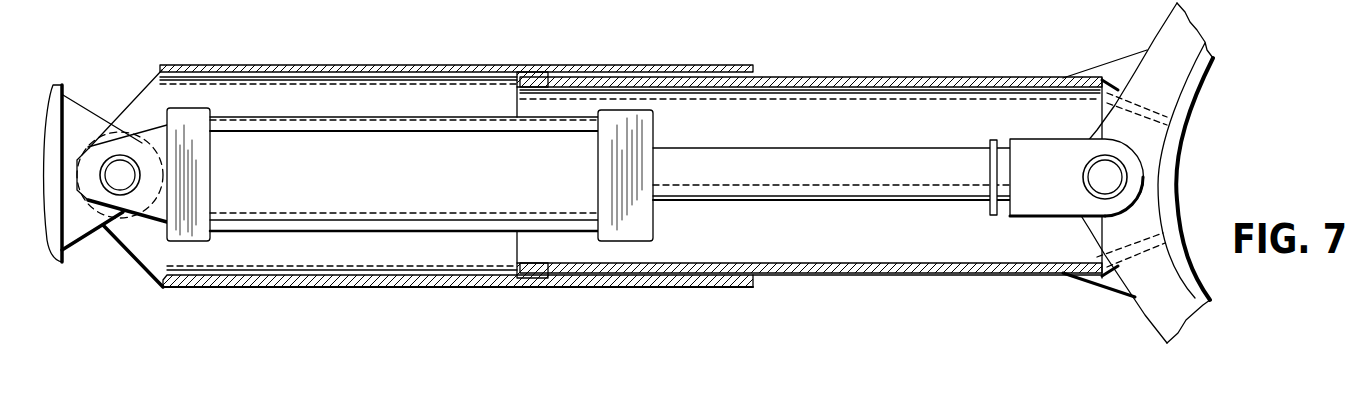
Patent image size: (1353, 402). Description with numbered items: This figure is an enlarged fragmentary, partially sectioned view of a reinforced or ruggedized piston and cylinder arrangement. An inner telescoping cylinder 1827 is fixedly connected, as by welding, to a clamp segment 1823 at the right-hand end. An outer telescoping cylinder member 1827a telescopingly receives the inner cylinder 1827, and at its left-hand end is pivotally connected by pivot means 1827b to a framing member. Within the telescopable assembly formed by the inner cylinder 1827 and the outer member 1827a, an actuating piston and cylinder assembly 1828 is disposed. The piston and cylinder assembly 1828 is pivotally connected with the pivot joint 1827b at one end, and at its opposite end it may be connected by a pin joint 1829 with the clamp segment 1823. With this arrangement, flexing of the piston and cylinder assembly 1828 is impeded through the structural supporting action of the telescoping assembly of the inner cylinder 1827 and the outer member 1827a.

The clamp segment 1823 is at (1173, 82).
The inner telescoping cylinder 1827 is at (852, 78).
The outer telescoping cylinder member 1827a is at (381, 65).
The pivot means 1827b is at (120, 172).
The actuating piston and cylinder assembly 1828 is at (643, 205).
The pin joint 1829 is at (1113, 175).